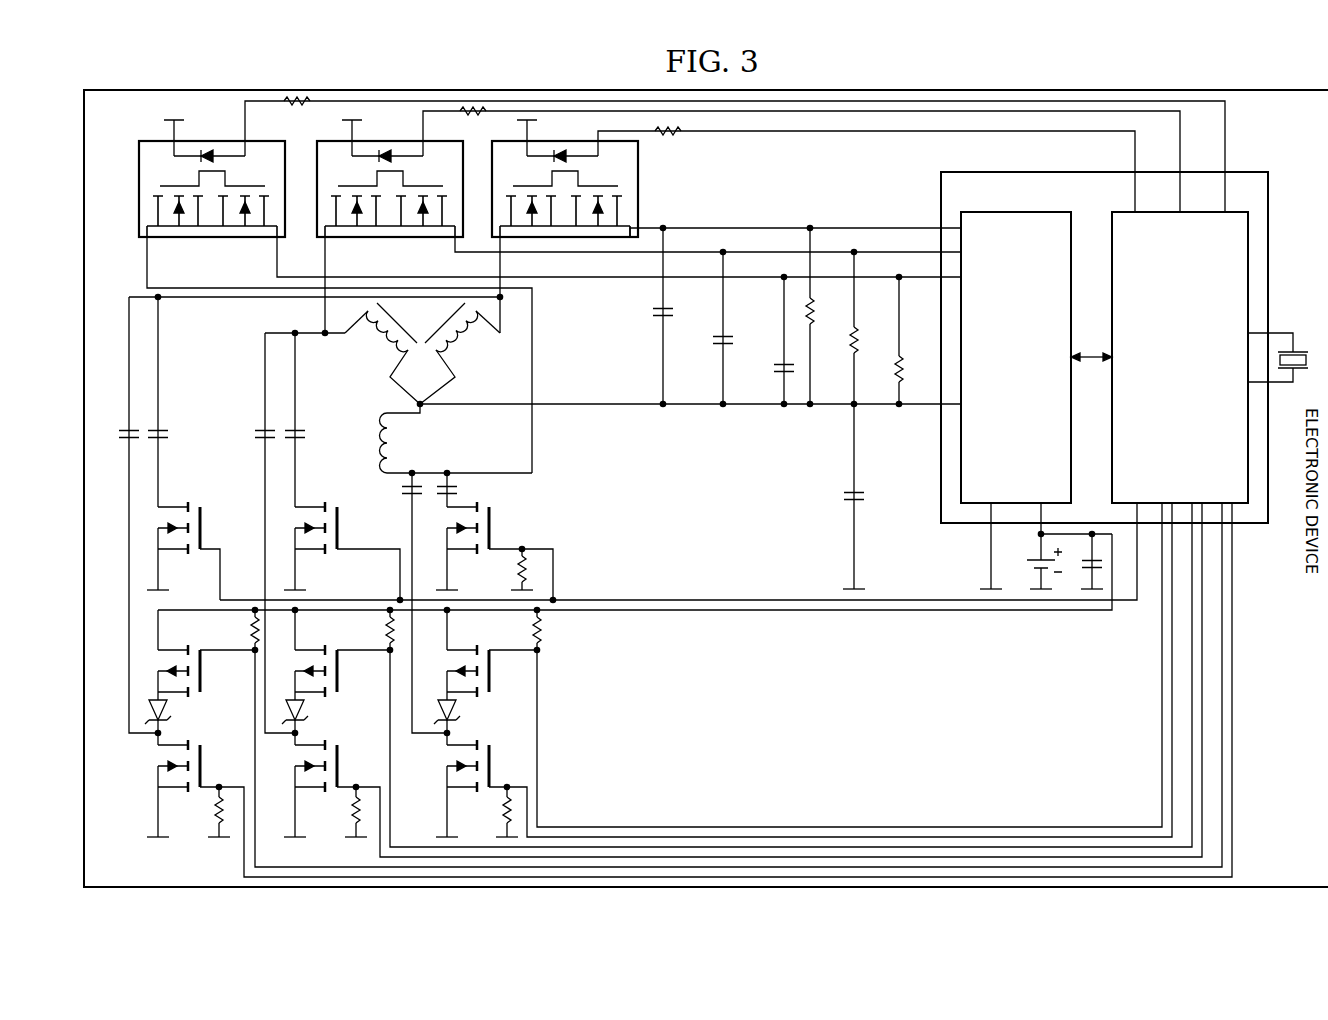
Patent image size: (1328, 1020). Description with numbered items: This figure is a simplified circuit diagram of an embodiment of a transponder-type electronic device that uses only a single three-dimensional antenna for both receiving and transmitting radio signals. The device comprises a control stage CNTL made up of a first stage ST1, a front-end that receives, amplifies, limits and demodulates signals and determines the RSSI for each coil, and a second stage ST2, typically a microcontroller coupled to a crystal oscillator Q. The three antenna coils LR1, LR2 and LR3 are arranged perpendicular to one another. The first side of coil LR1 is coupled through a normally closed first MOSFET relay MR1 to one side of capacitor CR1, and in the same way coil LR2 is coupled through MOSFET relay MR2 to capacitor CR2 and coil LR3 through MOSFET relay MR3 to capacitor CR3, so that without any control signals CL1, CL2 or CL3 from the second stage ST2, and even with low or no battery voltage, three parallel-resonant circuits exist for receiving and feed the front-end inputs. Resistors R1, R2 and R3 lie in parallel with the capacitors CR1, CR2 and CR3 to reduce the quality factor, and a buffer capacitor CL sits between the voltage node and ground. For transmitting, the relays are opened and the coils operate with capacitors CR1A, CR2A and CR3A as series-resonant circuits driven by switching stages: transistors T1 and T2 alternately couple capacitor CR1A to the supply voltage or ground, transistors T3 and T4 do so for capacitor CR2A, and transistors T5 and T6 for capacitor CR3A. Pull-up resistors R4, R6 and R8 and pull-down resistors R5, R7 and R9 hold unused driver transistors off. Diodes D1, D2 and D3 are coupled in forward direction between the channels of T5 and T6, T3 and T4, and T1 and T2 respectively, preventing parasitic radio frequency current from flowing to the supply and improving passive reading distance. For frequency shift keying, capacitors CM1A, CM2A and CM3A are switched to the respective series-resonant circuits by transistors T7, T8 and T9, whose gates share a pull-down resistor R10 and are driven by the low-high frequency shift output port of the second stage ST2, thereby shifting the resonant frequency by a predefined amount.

The first MOSFET relay MR1 is at (660, 287).
The MOSFET relay MR2 is at (748, 222).
The MOSFET relay MR3 is at (813, 226).
The control signal CL1 is at (297, 111).
The control signal CL2 is at (473, 122).
The control signal CL3 is at (668, 142).
The coil LR1 is at (440, 438).
The coil LR2 is at (382, 353).
The coil LR3 is at (460, 353).
The capacitor CR1A is at (400, 601).
The capacitor CM1A is at (473, 488).
The capacitor CR2A is at (262, 533).
The capacitor CM2A is at (307, 420).
The capacitor CR3A is at (126, 515).
The capacitor CM3A is at (171, 402).
The transistor T1 is at (492, 655).
The transistor T2 is at (804, 670).
The transistor T3 is at (342, 655).
The transistor T4 is at (743, 680).
The transistor T5 is at (206, 655).
The transistor T6 is at (689, 690).
The transistor T7 is at (494, 551).
The transistor T8 is at (342, 551).
The transistor T9 is at (188, 551).
The first diode D1 is at (170, 722).
The diode D2 is at (307, 722).
The diode D3 is at (459, 722).
The resistor R1 is at (913, 341).
The resistor R2 is at (868, 328).
The resistor R3 is at (824, 316).
The pull-up resistor R4 is at (834, 665).
The pull-down resistor R5 is at (497, 810).
The pull-up resistor R6 is at (776, 675).
The pull-down resistor R7 is at (346, 810).
The pull-up resistor R8 is at (723, 685).
The pull-down resistor R9 is at (209, 810).
The pull-down resistor R10 is at (507, 568).
The capacitor CR1 is at (767, 341).
The capacitor CR2 is at (706, 328).
The capacitor CR3 is at (646, 316).
The buffer capacitor CL is at (843, 496).
The control stage CNTL is at (1104, 347).
The first stage ST1 is at (1016, 357).
The second stage ST2 is at (1180, 357).
The crystal oscillator Q is at (1286, 357).